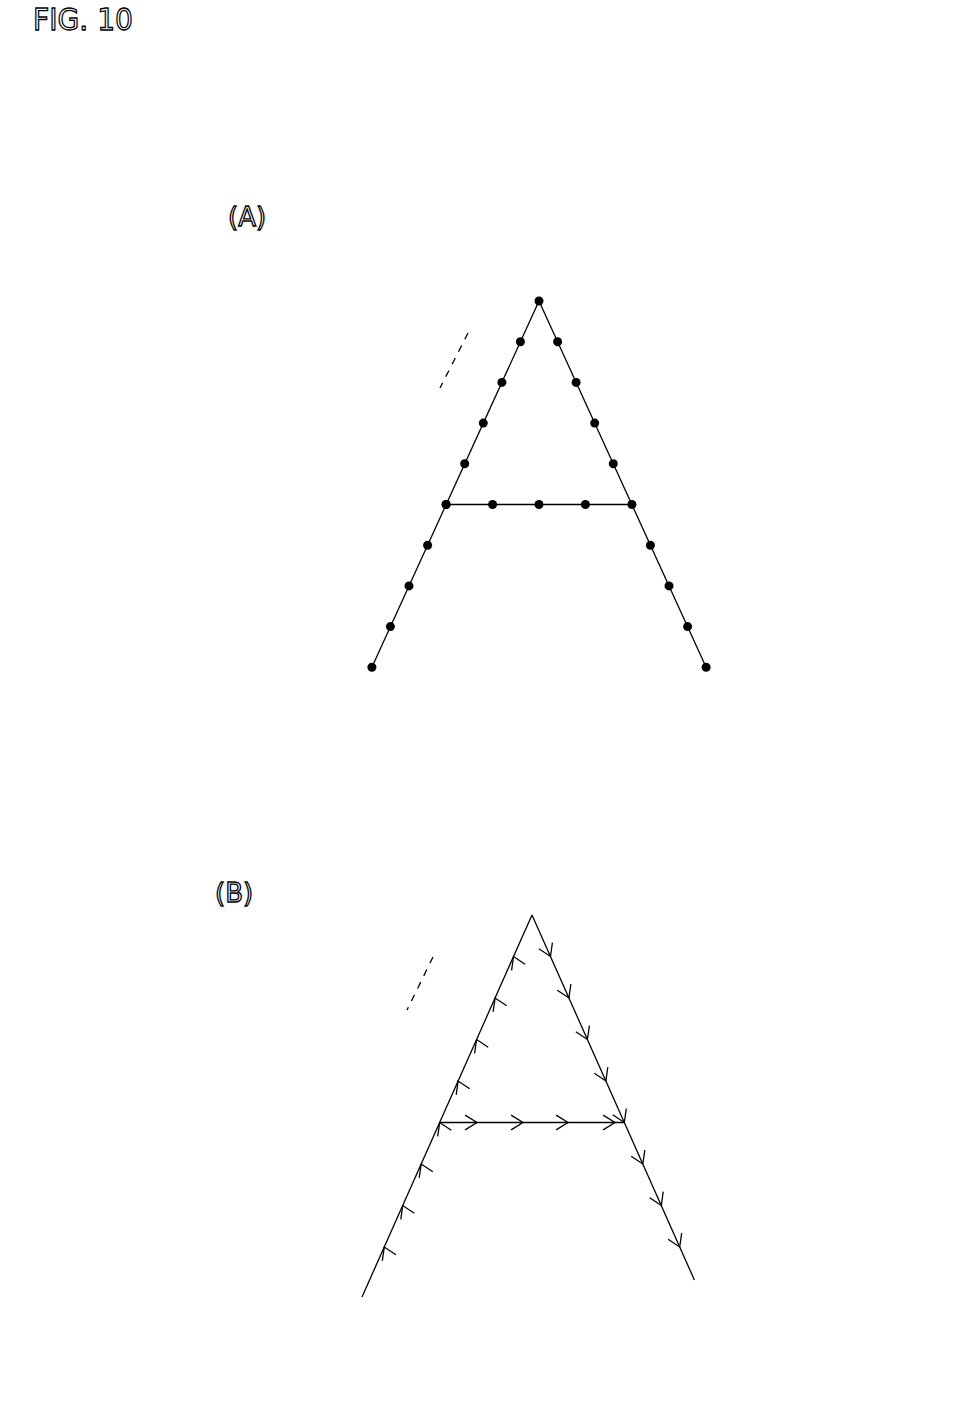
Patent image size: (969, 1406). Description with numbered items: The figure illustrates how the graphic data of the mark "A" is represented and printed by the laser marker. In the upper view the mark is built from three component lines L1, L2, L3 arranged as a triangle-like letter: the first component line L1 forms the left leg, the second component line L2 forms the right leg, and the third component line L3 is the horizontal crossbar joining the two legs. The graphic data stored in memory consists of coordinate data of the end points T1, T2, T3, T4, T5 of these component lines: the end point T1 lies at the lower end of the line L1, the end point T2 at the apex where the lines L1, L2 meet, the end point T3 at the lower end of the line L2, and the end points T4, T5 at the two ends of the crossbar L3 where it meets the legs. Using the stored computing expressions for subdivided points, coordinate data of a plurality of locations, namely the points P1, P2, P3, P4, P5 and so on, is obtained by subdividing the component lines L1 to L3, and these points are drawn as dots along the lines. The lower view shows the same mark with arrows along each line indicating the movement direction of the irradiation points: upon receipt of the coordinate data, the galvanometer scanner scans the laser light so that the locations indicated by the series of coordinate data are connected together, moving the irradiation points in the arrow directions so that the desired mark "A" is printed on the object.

In FIG. 10A, the end point T1 is at (356, 683).
In FIG. 10B, the end point T1 is at (362, 1297).
In FIG. 10A, the end point T2 is at (556, 275).
In FIG. 10B, the end point T2 is at (532, 915).
In FIG. 10A, the end point T3 is at (724, 689).
In FIG. 10B, the end point T3 is at (694, 1280).
In FIG. 10A, the end point T4 is at (434, 486).
In FIG. 10A, the end point T5 is at (650, 485).
In FIG. 10A, the subdivided point P1 is at (388, 626).
In FIG. 10B, the subdivided point P1 is at (382, 1246).
In FIG. 10A, the subdivided point P2 is at (407, 585).
In FIG. 10B, the subdivided point P2 is at (400, 1205).
In FIG. 10A, the subdivided point P3 is at (425, 544).
In FIG. 10B, the subdivided point P3 is at (418, 1162).
In FIG. 10A, the subdivided point P4 is at (444, 503).
In FIG. 10B, the subdivided point P4 is at (437, 1120).
In FIG. 10A, the subdivided point P5 is at (463, 461).
In FIG. 10B, the subdivided point P5 is at (456, 1078).
In FIG. 10A, the component line L1 is at (386, 642).
In FIG. 10A, the component line L2 is at (694, 640).
In FIG. 10A, the component line L3 is at (598, 507).